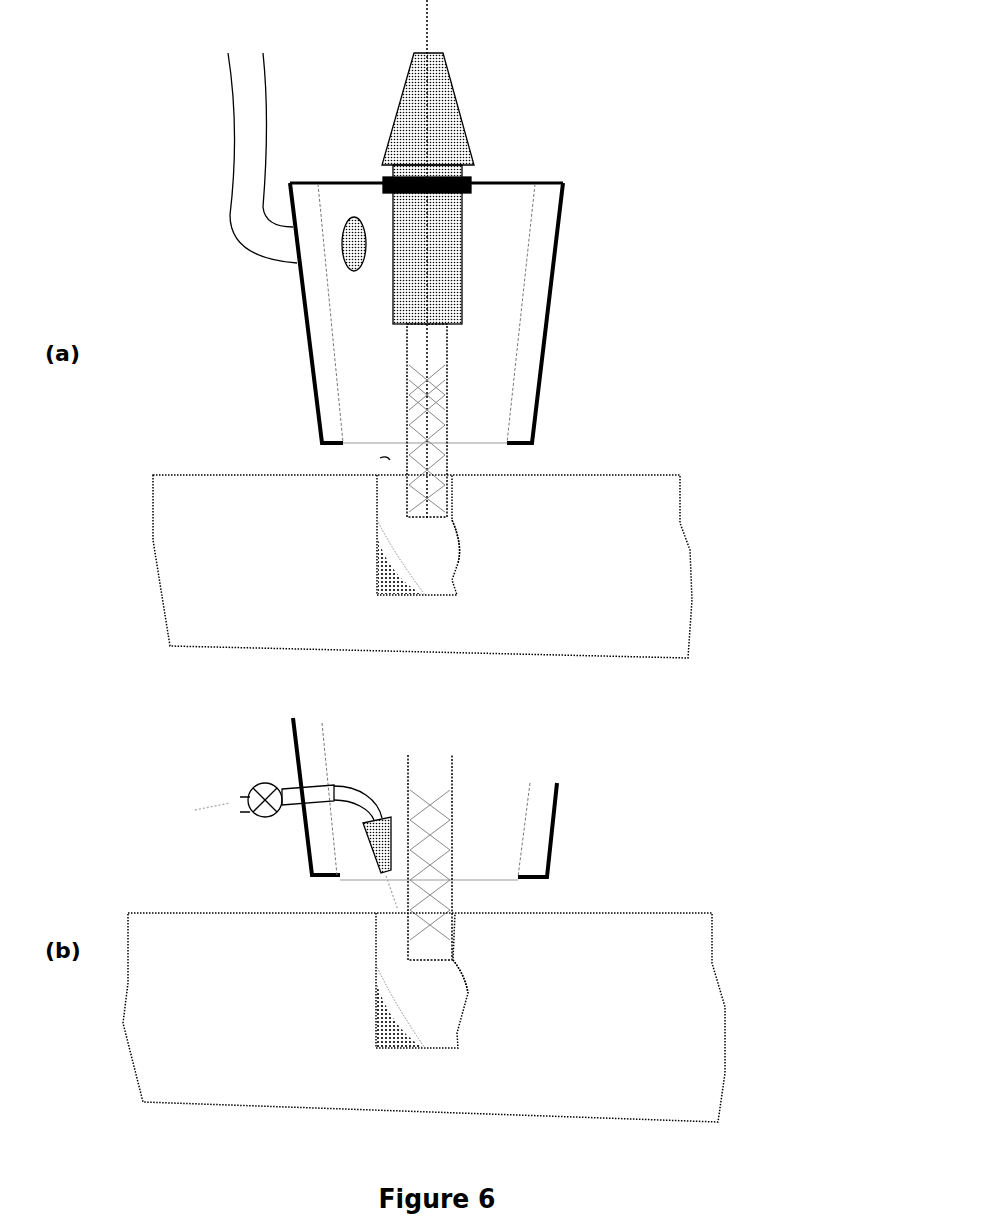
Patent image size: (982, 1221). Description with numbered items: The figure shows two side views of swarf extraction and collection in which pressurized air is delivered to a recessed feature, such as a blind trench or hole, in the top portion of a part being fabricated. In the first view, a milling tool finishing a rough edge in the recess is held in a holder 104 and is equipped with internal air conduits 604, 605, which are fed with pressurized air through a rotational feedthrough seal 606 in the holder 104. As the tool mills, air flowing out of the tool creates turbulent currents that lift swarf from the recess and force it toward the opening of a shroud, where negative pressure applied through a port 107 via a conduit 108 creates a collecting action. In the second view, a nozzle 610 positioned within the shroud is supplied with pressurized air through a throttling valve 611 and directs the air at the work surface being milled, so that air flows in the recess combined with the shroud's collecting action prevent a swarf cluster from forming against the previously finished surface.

The holder 104 is at (407, 72).
The port 107 is at (363, 240).
The conduit 108 is at (231, 183).
The internal air conduit 604 is at (427, 413).
The internal air conduit 605 is at (417, 480).
The seal 606 is at (437, 52).
The nozzle 610 is at (380, 862).
The valve 611 is at (263, 783).